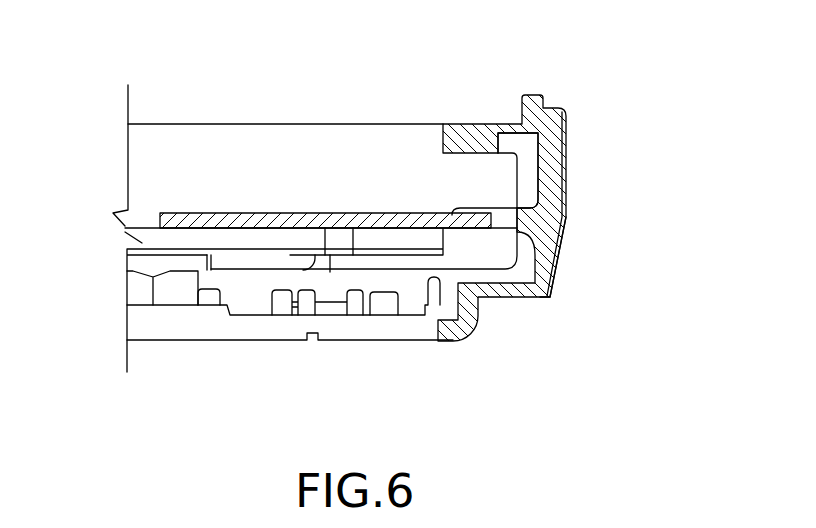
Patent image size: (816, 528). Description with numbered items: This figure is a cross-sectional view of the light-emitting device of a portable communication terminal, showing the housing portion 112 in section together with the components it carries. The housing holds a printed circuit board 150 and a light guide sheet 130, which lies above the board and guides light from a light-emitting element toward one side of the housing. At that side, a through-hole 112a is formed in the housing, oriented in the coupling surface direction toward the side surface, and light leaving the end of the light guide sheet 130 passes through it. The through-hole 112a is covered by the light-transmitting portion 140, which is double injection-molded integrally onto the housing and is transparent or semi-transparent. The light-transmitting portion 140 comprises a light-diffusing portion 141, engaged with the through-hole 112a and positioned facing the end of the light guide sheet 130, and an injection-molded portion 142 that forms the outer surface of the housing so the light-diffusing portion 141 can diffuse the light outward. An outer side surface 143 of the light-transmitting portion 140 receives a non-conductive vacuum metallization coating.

The housing 112 is at (580, 139).
The through-hole 112a is at (524, 209).
The light guide sheet 130 is at (262, 212).
The light-transmitting portion 140 is at (455, 222).
The light-diffusing portion 141 is at (520, 222).
The injection-molded portion 142 is at (544, 271).
The outer side surface 143 is at (549, 291).
The printed circuit board 150 is at (190, 242).